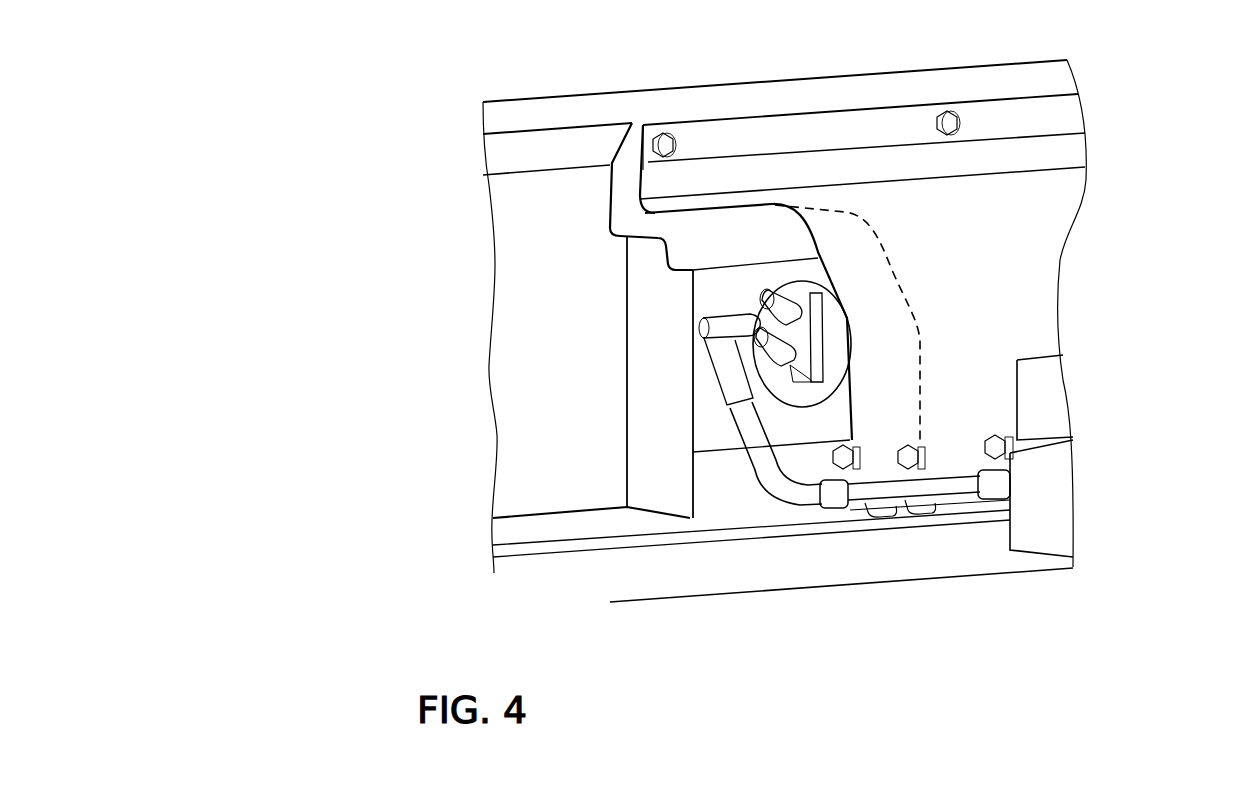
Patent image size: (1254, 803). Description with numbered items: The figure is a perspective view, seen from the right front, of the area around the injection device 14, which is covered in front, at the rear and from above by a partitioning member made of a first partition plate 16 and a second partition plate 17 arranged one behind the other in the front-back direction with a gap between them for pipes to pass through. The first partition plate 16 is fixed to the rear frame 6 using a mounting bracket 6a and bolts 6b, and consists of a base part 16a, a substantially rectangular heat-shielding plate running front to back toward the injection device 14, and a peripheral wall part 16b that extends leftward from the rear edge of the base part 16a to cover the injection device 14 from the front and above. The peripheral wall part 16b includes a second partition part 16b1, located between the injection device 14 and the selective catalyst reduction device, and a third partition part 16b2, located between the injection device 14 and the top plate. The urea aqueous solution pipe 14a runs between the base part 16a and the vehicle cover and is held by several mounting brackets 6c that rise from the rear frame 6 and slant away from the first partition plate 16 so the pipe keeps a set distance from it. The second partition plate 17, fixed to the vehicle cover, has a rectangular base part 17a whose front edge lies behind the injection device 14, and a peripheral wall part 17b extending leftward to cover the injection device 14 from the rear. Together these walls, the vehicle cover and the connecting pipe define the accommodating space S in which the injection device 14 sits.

The rear frame 6 is at (996, 80).
The mounting bracket 6a is at (908, 508).
The bolts 6b is at (905, 452).
The mounting brackets 6c is at (840, 513).
The injection device 14 is at (783, 392).
The urea aqueous solution pipe 14a is at (800, 497).
The first partition plate 16 is at (845, 104).
The base part 16a is at (1033, 267).
The peripheral wall part 16b is at (858, 238).
The second partition part 16b1 is at (920, 320).
The third partition part 16b2 is at (705, 226).
The second partition plate 17 is at (578, 126).
The base part 17a is at (537, 415).
The peripheral wall part 17b is at (670, 407).
The accommodating space S is at (718, 428).